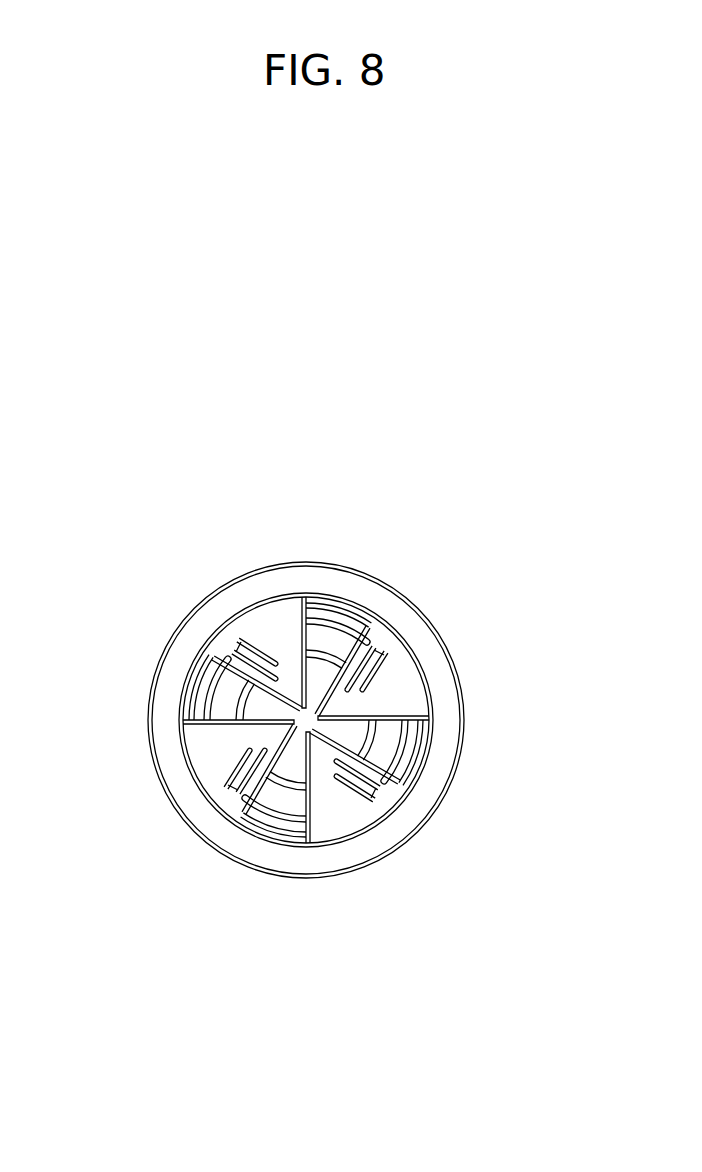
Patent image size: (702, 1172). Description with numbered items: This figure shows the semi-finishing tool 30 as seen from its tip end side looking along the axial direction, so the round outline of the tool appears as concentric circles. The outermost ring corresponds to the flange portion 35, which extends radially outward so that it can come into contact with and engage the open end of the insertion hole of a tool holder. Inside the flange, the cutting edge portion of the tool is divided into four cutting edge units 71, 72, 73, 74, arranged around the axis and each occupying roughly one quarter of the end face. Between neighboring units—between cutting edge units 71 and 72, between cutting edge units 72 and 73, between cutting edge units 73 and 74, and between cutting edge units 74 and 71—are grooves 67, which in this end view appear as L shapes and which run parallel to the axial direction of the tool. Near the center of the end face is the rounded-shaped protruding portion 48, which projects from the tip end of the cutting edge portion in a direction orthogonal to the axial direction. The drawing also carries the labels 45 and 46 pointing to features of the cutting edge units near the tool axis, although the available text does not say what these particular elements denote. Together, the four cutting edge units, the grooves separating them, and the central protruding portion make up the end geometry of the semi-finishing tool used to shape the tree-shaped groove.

The semi-finishing tool 30 is at (322, 440).
The flange portion 35 is at (437, 764).
The outer guide wall 45 is at (363, 633).
The intermediate guide wall 46 is at (332, 648).
The protruding portion 48 is at (318, 672).
The groove 67 is at (390, 690).
The cutting edge unit 71 is at (392, 612).
The cutting edge unit 72 is at (432, 783).
The cutting edge unit 73 is at (268, 848).
The cutting edge unit 74 is at (183, 660).